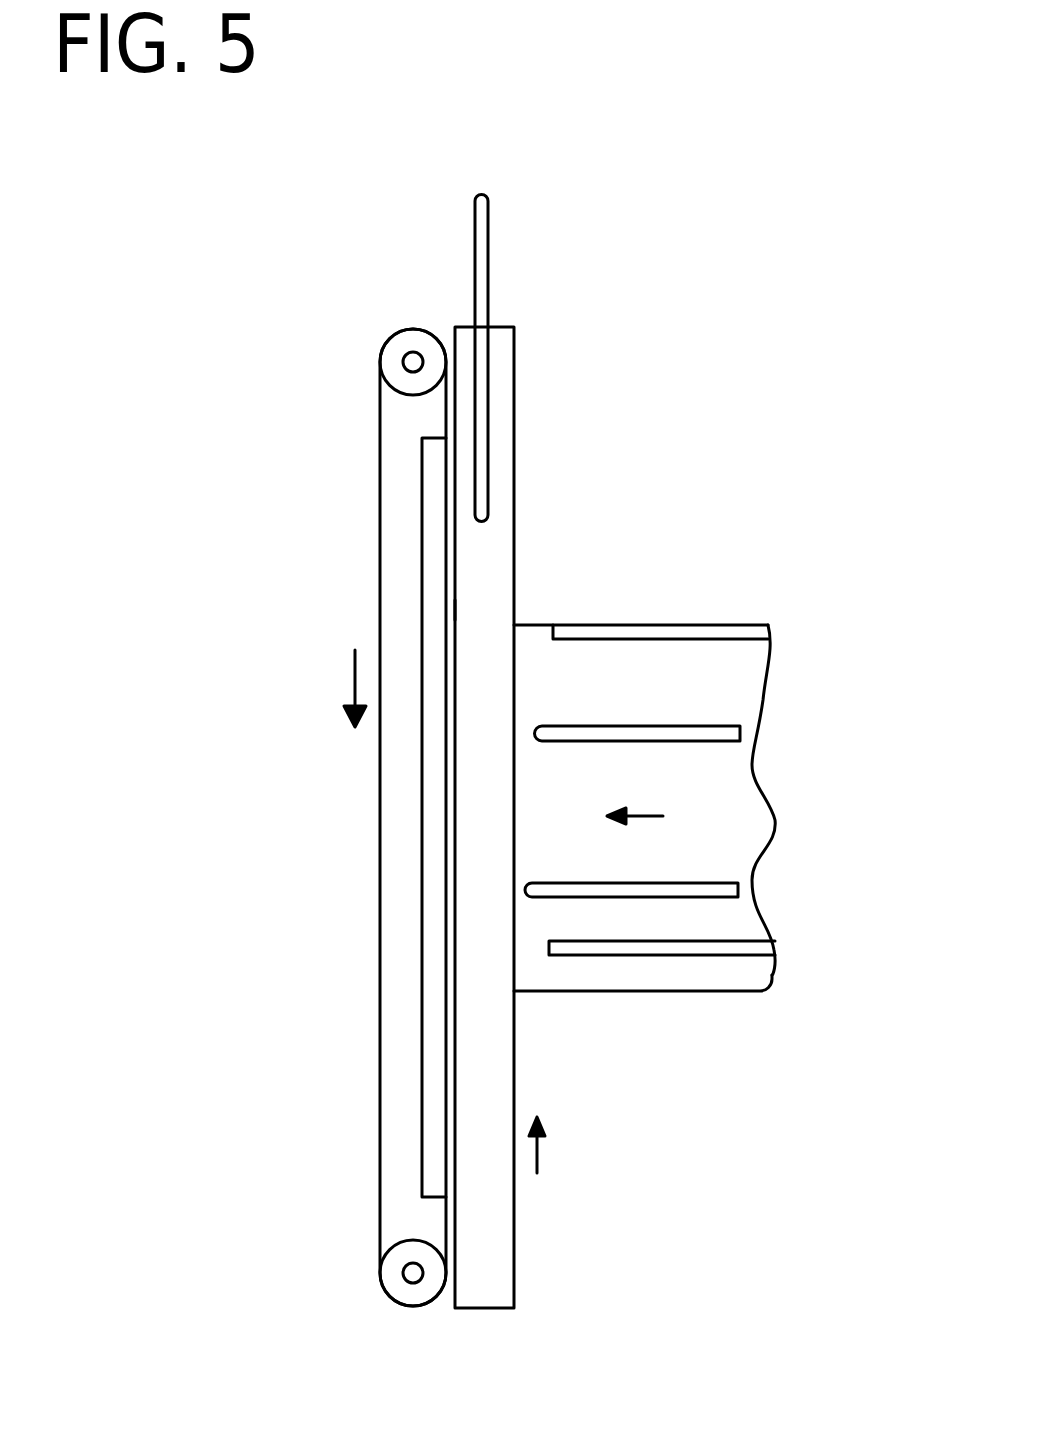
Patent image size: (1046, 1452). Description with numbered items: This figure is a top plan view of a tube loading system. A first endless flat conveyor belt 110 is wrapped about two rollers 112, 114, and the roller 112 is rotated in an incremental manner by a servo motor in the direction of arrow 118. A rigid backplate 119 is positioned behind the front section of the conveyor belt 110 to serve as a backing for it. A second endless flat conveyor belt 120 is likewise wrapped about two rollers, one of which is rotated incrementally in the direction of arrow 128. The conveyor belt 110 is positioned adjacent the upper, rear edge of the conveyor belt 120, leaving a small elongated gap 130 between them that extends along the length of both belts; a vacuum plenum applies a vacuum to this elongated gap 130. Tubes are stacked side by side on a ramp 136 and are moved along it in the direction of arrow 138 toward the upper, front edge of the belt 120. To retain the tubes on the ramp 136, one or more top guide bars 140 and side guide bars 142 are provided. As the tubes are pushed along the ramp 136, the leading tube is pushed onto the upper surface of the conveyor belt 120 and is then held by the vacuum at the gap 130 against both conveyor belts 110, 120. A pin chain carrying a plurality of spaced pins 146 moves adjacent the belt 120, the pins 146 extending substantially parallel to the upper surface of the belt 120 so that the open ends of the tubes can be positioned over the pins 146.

The first endless flat conveyor belt 110 is at (380, 858).
The roller 112 is at (408, 1296).
The roller 114 is at (386, 367).
The arrow 118 is at (333, 671).
The rigid backplate 119 is at (434, 1072).
The second endless flat conveyor belt 120 is at (500, 533).
The arrow 128 is at (545, 1154).
The elongated gap 130 is at (455, 610).
The ramp 136 is at (752, 825).
The arrow 138 is at (635, 807).
The top guide bar 140 is at (715, 726).
The side guide bar 142 is at (695, 625).
The pin 146 is at (488, 246).